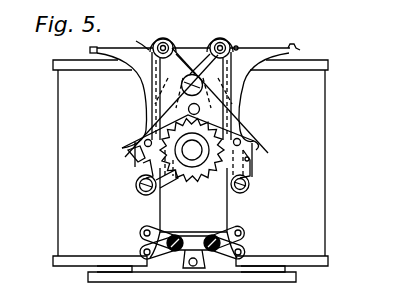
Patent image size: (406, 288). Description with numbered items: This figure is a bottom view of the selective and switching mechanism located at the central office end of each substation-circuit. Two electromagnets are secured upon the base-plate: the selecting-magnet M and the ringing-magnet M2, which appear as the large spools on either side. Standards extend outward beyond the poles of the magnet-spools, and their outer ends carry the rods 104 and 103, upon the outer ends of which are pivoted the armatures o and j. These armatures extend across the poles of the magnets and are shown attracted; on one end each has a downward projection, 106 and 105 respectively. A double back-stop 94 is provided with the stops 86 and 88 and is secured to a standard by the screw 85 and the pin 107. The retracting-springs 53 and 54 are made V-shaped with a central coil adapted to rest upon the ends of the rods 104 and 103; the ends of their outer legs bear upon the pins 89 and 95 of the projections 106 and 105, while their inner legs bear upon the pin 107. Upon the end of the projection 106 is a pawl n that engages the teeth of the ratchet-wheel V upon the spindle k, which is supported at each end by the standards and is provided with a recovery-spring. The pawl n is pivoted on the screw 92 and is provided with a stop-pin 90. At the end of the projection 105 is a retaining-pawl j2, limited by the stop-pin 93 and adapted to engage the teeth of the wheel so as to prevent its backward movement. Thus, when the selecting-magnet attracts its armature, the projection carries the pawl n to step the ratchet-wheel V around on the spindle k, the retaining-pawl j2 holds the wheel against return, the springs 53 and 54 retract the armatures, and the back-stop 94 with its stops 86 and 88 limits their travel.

The selecting-magnet M is at (87, 163).
The ringing-magnet M2 is at (293, 163).
The armature o is at (88, 48).
The armature j is at (295, 43).
The retracting-spring 53 is at (237, 46).
The retracting-spring 54 is at (133, 42).
The rod 104 is at (160, 42).
The rod 103 is at (226, 35).
The downward projection 106 is at (146, 90).
The downward projection 105 is at (240, 97).
The screw 85 is at (194, 78).
The pin 107 is at (188, 109).
The double back-stop 94 is at (136, 125).
The pin 95 is at (256, 140).
The stop 86 is at (122, 140).
The stop 88 is at (262, 142).
The pin 89 is at (128, 151).
The stop-pin 90 is at (144, 164).
The screw 92 is at (137, 185).
The stop-pin 93 is at (250, 163).
The retaining-pawl j2 is at (248, 185).
The spindle k is at (192, 150).
The ratchet-wheel V is at (193, 200).
The pawl n is at (188, 231).